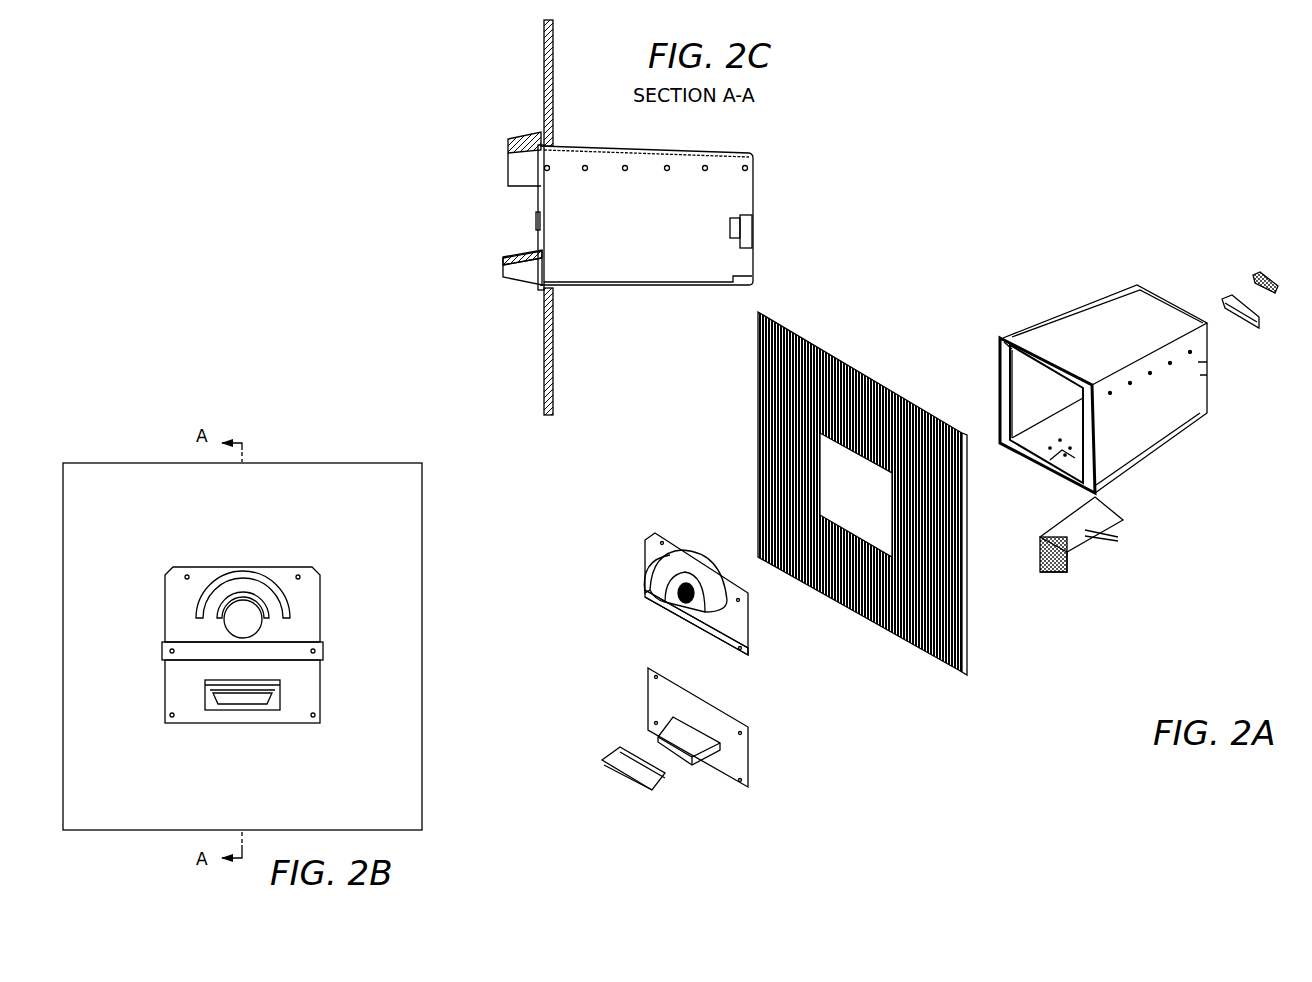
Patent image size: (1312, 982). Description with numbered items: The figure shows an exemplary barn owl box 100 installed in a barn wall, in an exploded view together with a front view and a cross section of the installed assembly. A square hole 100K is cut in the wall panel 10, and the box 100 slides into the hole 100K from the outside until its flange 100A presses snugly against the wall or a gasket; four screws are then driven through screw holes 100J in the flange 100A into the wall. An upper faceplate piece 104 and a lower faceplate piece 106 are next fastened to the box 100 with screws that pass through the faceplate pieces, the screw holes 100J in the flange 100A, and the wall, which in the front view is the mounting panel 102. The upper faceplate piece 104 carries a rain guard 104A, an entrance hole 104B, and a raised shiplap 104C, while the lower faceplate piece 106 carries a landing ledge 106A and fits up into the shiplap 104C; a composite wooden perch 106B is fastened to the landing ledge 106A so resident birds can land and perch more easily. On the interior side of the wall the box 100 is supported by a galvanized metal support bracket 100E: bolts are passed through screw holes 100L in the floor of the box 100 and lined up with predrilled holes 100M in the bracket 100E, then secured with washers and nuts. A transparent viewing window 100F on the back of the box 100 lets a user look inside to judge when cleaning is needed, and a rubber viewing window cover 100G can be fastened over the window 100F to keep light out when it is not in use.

In FIG. 2A, the panel 10 is at (962, 672).
In FIG. 2C, the barn owl box 100 is at (673, 222).
In FIG. 2A, the barn owl box 100 is at (1108, 322).
In FIG. 2A, the flange 100A is at (998, 360).
In FIG. 2A, the galvanized metal support bracket 100E is at (1072, 568).
In FIG. 2A, the viewing window 100F is at (1237, 290).
In FIG. 2A, the viewing window cover 100G is at (1262, 272).
In FIG. 2A, the screw holes 100J is at (1013, 338).
In FIG. 2A, the square hole 100K is at (859, 495).
In FIG. 2A, the screw holes 100L is at (1056, 455).
In FIG. 2A, the predrilled holes 100M is at (1127, 541).
In FIG. 2C, the mounting panel 102 is at (543, 363).
In FIG. 2B, the mounting panel 102 is at (373, 473).
In FIG. 2B, the upper faceplate piece 104 is at (313, 607).
In FIG. 2A, the upper faceplate piece 104 is at (645, 548).
In FIG. 2C, the rain guard 104A is at (522, 133).
In FIG. 2B, the rain guard 104A is at (246, 586).
In FIG. 2A, the rain guard 104A is at (695, 556).
In FIG. 2B, the entrance hole 104B is at (253, 627).
In FIG. 2A, the entrance hole 104B is at (690, 600).
In FIG. 2C, the raised shiplap 104C is at (537, 220).
In FIG. 2B, the raised shiplap 104C is at (163, 651).
In FIG. 2A, the raised shiplap 104C is at (752, 659).
In FIG. 2B, the lower faceplate piece 106 is at (313, 695).
In FIG. 2A, the lower faceplate piece 106 is at (643, 697).
In FIG. 2C, the landing ledge 106A is at (503, 265).
In FIG. 2B, the landing ledge 106A is at (248, 698).
In FIG. 2A, the landing ledge 106A is at (708, 752).
In FIG. 2A, the composite wooden perch 106B is at (628, 782).